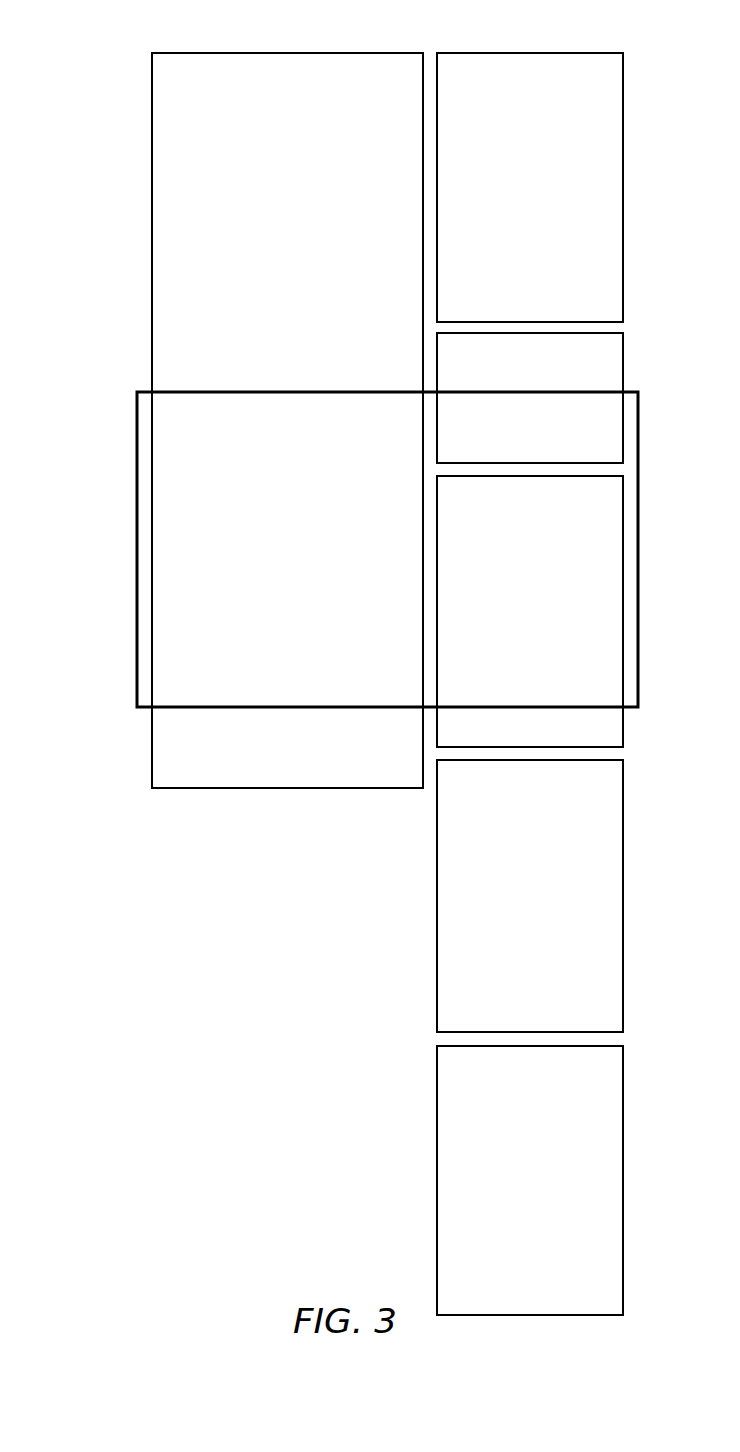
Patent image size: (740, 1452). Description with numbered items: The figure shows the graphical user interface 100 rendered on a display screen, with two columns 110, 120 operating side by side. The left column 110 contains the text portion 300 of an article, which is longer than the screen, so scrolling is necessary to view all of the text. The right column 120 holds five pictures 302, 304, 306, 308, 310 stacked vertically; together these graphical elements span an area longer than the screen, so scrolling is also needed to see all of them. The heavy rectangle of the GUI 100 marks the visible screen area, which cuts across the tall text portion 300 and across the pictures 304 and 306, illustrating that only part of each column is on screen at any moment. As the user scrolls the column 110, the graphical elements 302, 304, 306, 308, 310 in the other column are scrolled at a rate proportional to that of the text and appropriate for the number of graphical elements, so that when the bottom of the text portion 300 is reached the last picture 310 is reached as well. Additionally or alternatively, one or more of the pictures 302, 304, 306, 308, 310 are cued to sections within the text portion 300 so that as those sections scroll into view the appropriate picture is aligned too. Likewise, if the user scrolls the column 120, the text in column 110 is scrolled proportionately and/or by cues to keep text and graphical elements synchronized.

The graphical user interface 100 is at (128, 456).
The column 110 is at (274, 34).
The column 120 is at (529, 34).
The text portion 300 is at (416, 86).
The picture 302 is at (615, 86).
The picture 304 is at (615, 366).
The picture 306 is at (615, 506).
The picture 308 is at (615, 794).
The picture 310 is at (615, 1078).